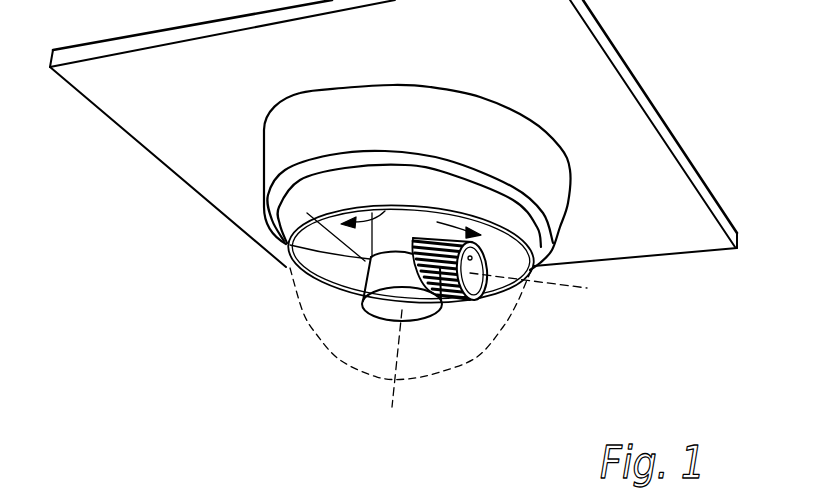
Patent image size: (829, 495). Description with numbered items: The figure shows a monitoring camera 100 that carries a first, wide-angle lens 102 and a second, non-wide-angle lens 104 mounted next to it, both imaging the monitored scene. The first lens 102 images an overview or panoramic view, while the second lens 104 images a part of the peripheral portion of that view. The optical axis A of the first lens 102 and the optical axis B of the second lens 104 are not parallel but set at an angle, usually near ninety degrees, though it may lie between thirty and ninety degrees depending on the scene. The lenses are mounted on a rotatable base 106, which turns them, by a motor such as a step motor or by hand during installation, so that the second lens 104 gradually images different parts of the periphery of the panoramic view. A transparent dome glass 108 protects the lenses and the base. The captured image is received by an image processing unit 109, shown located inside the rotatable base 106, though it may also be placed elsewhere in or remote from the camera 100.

The monitoring camera 100 is at (355, 385).
The first, wide-angle lens 102 is at (418, 312).
The second, non-wide-angle lens 104 is at (485, 297).
The rotatable base 106 is at (412, 224).
The transparent dome glass 108 is at (316, 317).
The image processing unit 109 is at (312, 131).
The optical axis of the first lens A is at (390, 373).
The optical axis of the second lens B is at (540, 289).